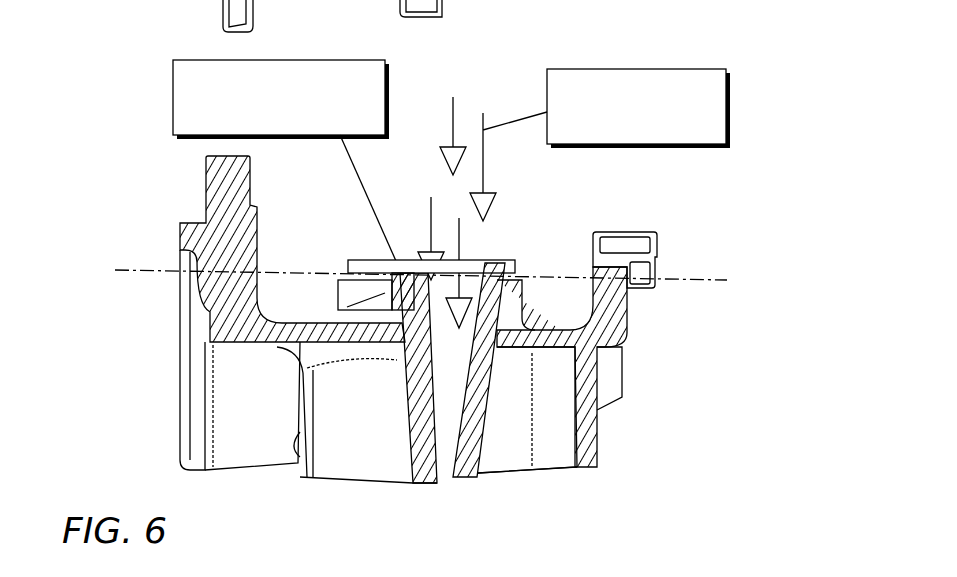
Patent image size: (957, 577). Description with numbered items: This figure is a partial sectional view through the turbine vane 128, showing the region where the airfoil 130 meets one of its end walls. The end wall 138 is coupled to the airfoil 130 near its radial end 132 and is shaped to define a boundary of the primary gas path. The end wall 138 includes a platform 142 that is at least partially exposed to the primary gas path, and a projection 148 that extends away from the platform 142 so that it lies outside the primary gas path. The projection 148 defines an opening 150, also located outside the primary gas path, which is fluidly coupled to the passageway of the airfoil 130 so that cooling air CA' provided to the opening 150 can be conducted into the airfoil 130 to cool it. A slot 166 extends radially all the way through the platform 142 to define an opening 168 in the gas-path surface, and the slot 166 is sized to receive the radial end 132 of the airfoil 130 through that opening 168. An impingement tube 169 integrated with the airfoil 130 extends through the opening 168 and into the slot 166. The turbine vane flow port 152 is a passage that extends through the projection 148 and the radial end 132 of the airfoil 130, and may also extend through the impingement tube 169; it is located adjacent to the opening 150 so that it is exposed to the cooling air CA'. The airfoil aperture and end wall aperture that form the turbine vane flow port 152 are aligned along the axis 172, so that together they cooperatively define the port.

The turbine vane 128 is at (645, 205).
The airfoil 130 is at (424, 404).
The radial end 132 is at (409, 266).
The end wall 138 is at (625, 321).
The platform 142 is at (262, 338).
The projection 148 is at (514, 298).
The opening 150 is at (451, 238).
The turbine vane flow port 152 is at (173, 100).
The slot 166 is at (390, 335).
The opening 168 is at (384, 372).
The impingement tube 169 is at (493, 262).
The axis 172 is at (143, 272).
The cooling air CA' is at (585, 110).